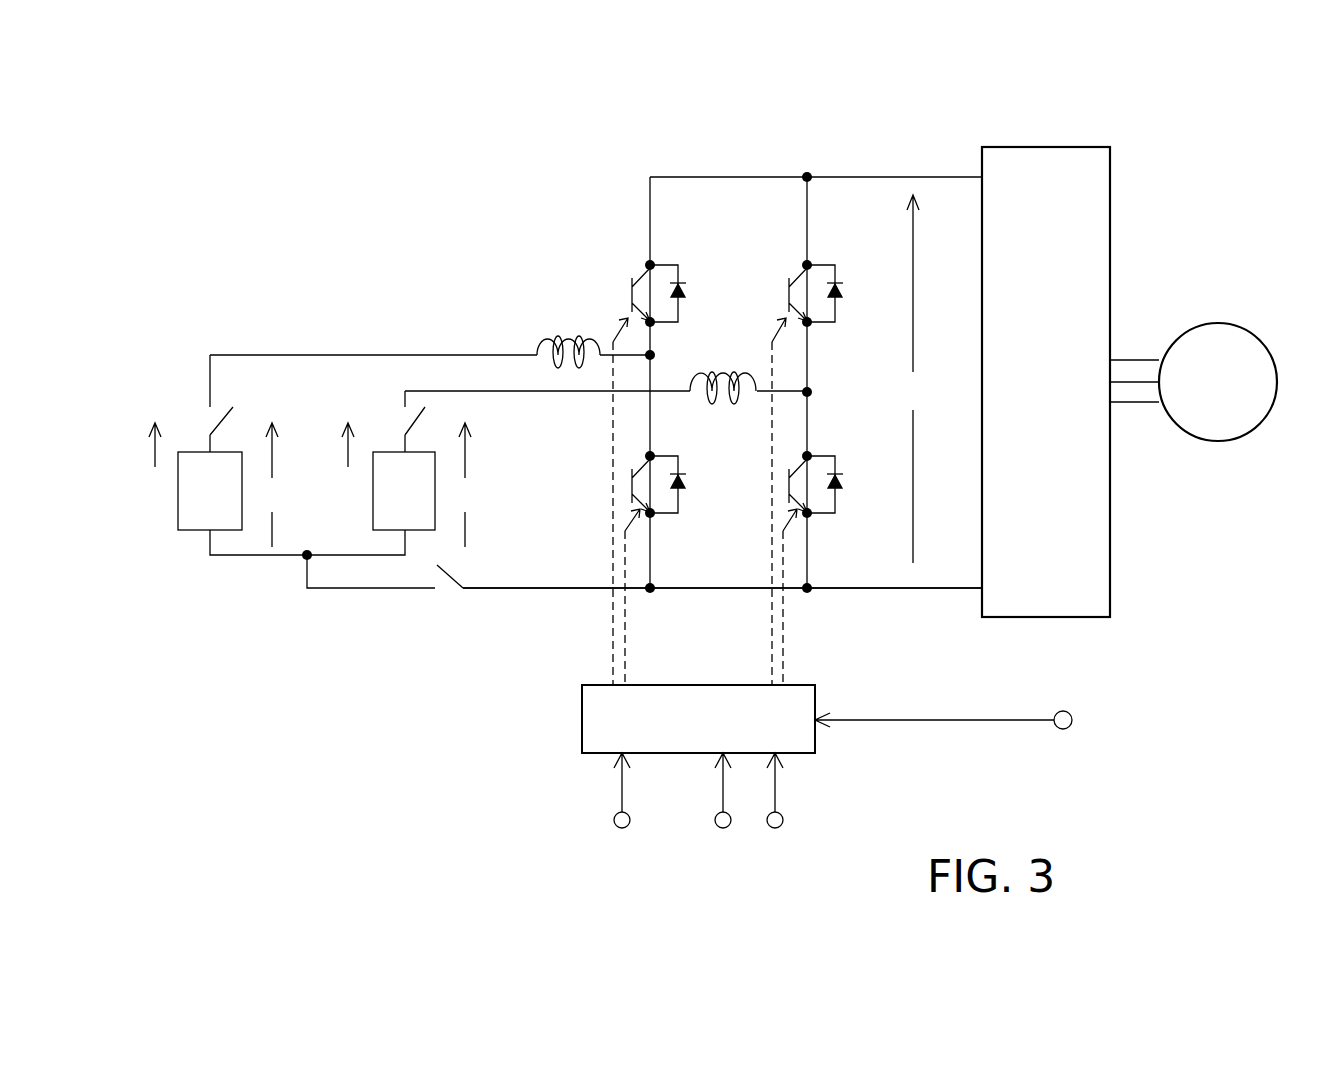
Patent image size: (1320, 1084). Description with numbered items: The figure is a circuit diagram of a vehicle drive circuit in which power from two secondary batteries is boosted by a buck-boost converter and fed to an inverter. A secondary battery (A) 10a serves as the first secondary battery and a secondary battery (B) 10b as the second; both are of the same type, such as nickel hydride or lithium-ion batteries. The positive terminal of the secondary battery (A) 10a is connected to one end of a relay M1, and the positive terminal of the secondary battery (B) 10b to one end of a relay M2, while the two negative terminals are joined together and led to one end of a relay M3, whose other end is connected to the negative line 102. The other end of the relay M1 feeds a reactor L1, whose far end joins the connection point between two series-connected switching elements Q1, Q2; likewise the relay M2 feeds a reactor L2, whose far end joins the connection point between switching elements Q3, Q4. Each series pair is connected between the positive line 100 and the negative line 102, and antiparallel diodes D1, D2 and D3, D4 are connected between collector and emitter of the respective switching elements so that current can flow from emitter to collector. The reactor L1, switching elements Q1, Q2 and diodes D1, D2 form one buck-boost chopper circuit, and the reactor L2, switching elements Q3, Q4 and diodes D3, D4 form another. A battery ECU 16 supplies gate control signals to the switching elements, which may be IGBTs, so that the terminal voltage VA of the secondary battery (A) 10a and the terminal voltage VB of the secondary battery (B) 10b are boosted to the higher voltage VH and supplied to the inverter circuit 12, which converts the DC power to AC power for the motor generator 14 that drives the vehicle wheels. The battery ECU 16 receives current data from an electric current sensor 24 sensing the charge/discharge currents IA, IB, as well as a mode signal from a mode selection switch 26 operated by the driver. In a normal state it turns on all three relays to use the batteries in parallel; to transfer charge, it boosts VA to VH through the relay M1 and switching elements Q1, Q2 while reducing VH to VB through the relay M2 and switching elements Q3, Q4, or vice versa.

The positive line 100 is at (727, 177).
The negative line 102 is at (726, 589).
The secondary battery (A) 10a is at (187, 533).
The secondary battery (B) 10b is at (428, 452).
The inverter circuit 12 is at (1050, 147).
The motor generator 14 is at (1240, 325).
The battery ECU 16 is at (582, 717).
The electric current sensor 24 is at (620, 828).
The mode selection switch 26 is at (1072, 714).
The switching element Q1 is at (630, 280).
The switching element Q2 is at (630, 472).
The switching element Q3 is at (790, 282).
The switching element Q4 is at (790, 472).
The antiparallel diode D1 is at (690, 292).
The antiparallel diode D2 is at (690, 484).
The antiparallel diode D3 is at (847, 292).
The antiparallel diode D4 is at (847, 484).
The reactor L1 is at (567, 340).
The reactor L2 is at (606, 374).
The relay M1 is at (205, 418).
The relay M2 is at (397, 425).
The relay M3 is at (445, 595).
The charge/discharge electric current IA is at (153, 469).
The terminal voltage VA is at (272, 485).
The charge/discharge electric current IB is at (348, 469).
The terminal voltage VB is at (465, 485).
The boosted voltage VH is at (912, 379).